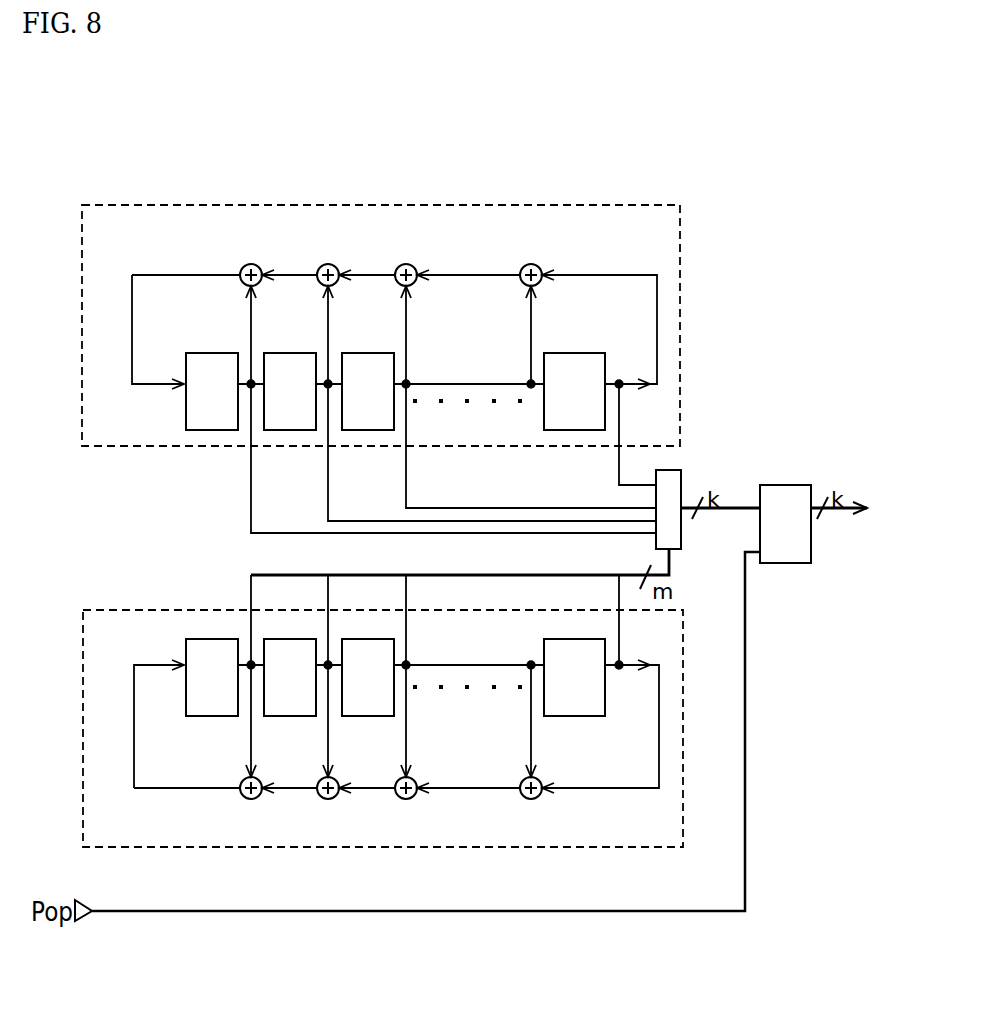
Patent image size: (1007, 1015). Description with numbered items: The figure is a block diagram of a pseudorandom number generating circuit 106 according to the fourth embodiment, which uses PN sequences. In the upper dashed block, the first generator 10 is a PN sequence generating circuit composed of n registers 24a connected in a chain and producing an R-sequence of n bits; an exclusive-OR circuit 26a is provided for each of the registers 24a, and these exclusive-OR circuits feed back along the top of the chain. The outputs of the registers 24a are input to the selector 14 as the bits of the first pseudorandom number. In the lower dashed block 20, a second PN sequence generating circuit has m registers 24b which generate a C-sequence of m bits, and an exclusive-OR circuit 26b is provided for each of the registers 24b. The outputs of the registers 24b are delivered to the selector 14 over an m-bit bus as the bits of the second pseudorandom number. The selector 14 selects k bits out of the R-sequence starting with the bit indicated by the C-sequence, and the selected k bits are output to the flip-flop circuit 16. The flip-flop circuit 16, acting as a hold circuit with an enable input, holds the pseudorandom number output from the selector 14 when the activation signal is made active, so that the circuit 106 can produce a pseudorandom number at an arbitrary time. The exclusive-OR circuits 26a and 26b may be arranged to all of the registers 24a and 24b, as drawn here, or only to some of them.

The pseudorandom number generating circuit 106 is at (713, 208).
The first generator 10 is at (681, 255).
The second register group (C registers) 20 is at (683, 656).
The selector 14 is at (681, 470).
The flip-flop circuit 16 is at (811, 485).
The registers 24a is at (228, 352).
The registers 24b is at (207, 717).
The exclusive-OR circuit 26a is at (255, 263).
The exclusive-OR circuit 26b is at (254, 800).